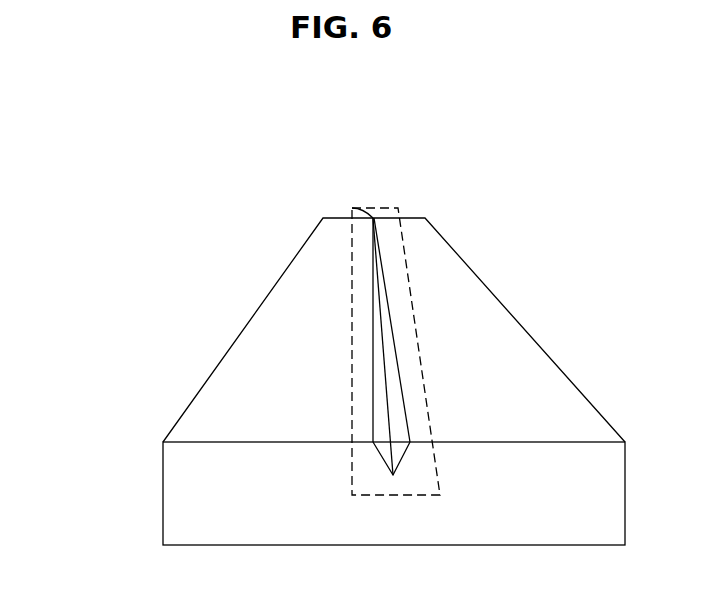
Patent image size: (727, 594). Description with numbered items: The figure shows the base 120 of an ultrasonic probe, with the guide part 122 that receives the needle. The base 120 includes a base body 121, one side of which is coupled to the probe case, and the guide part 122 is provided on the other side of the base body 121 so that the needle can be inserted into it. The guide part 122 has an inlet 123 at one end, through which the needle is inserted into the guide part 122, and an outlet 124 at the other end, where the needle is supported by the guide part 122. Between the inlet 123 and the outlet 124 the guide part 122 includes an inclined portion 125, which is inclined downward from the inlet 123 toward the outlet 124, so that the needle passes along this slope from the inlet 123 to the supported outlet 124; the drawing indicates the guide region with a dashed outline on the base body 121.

The base 120 is at (304, 200).
The base body 121 is at (492, 325).
The guide part 122 is at (93, 248).
The inlet 123 is at (393, 475).
The outlet 124 is at (352, 208).
The inclined portion 125 is at (382, 345).